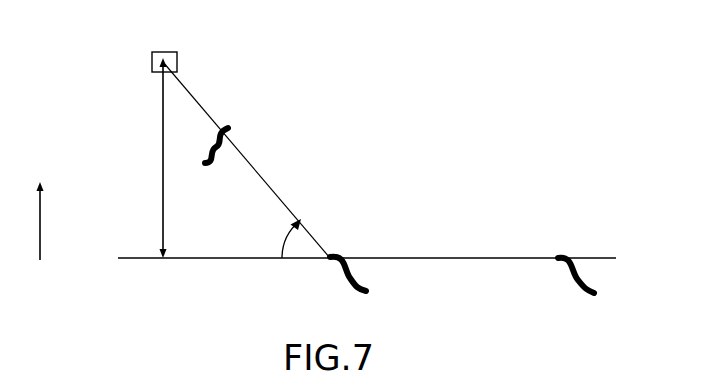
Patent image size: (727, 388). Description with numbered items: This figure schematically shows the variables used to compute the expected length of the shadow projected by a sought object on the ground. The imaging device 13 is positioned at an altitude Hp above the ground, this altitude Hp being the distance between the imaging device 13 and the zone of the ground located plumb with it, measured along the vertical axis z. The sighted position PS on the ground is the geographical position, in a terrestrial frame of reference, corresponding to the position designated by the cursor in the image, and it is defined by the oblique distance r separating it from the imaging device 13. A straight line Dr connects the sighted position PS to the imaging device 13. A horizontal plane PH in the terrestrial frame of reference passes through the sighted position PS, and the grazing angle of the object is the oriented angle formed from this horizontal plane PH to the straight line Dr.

The imaging device 13 is at (152, 62).
The oblique distance r is at (246, 160).
The altitude of the imaging device Hp is at (151, 158).
The vertical axis z is at (33, 221).
The straight line Dr is at (204, 154).
The sighted position PS is at (361, 283).
The horizontal plane PH is at (589, 284).